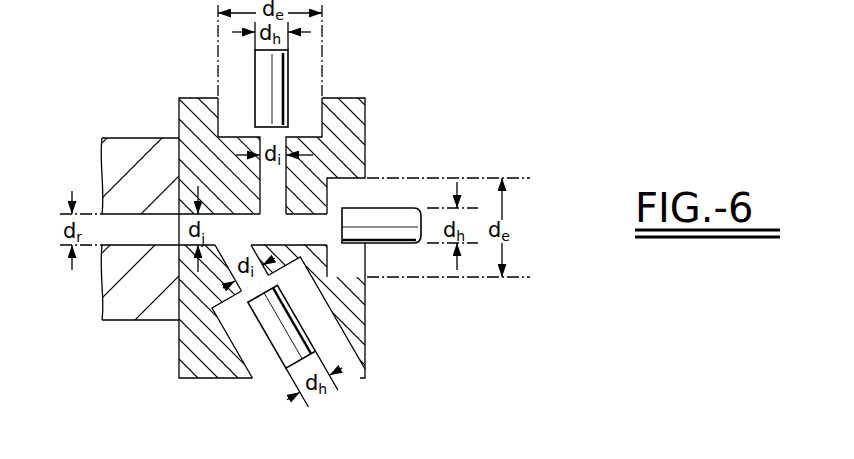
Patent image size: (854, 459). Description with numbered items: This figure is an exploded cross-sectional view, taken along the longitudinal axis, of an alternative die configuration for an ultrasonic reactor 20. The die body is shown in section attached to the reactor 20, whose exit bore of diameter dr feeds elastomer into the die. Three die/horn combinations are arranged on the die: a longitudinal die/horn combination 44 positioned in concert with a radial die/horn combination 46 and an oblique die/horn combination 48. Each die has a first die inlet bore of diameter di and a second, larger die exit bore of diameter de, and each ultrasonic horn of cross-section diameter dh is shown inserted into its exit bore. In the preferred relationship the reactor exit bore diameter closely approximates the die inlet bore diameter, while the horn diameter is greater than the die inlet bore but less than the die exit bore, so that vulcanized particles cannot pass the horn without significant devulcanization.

The reactor 20 is at (133, 137).
The longitudinal die/horn combination 44 is at (367, 202).
The radial die/horn combination 46 is at (294, 92).
The oblique die/horn combination 48 is at (356, 381).